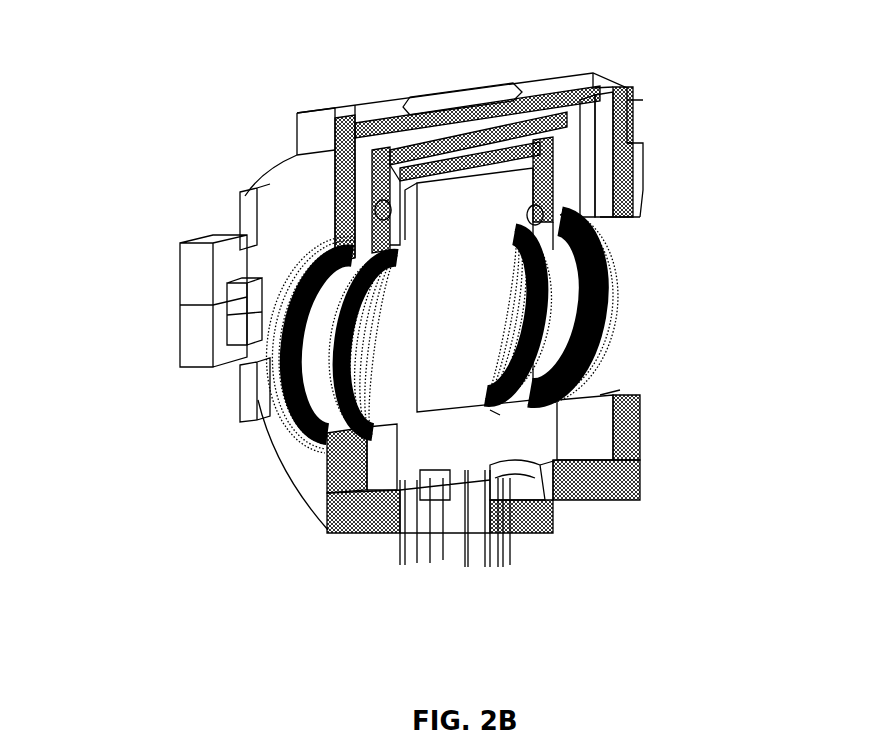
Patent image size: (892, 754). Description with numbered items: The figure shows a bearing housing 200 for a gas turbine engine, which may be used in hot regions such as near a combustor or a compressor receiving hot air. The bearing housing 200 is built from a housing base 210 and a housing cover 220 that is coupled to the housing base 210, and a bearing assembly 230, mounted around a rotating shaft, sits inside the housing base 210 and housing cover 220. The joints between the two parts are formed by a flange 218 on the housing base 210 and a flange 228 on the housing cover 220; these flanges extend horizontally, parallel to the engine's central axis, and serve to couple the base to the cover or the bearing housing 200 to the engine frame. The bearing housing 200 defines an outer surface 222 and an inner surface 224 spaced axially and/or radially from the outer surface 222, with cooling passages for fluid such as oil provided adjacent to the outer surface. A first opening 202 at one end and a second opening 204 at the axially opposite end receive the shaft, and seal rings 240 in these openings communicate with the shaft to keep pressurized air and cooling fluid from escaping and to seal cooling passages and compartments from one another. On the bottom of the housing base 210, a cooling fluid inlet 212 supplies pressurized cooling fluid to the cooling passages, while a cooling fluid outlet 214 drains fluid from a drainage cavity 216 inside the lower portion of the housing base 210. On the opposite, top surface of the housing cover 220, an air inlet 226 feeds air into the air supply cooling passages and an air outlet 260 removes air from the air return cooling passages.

The bearing housing 200 is at (240, 56).
The first opening 202 is at (204, 415).
The second opening 204 is at (645, 298).
The housing base 210 is at (668, 432).
The cooling fluid inlet 212 is at (483, 544).
The cooling fluid outlet 214 is at (420, 553).
The drainage cavity 216 is at (510, 503).
The flange 218 is at (190, 328).
The housing cover 220 is at (660, 124).
The outer surface 222 is at (297, 168).
The inner surface 224 is at (607, 130).
The air inlet 226 is at (472, 128).
The flange 228 is at (190, 276).
The bearing assembly 230 is at (475, 290).
The seal rings 240 is at (313, 430).
The air outlet 260 is at (422, 104).